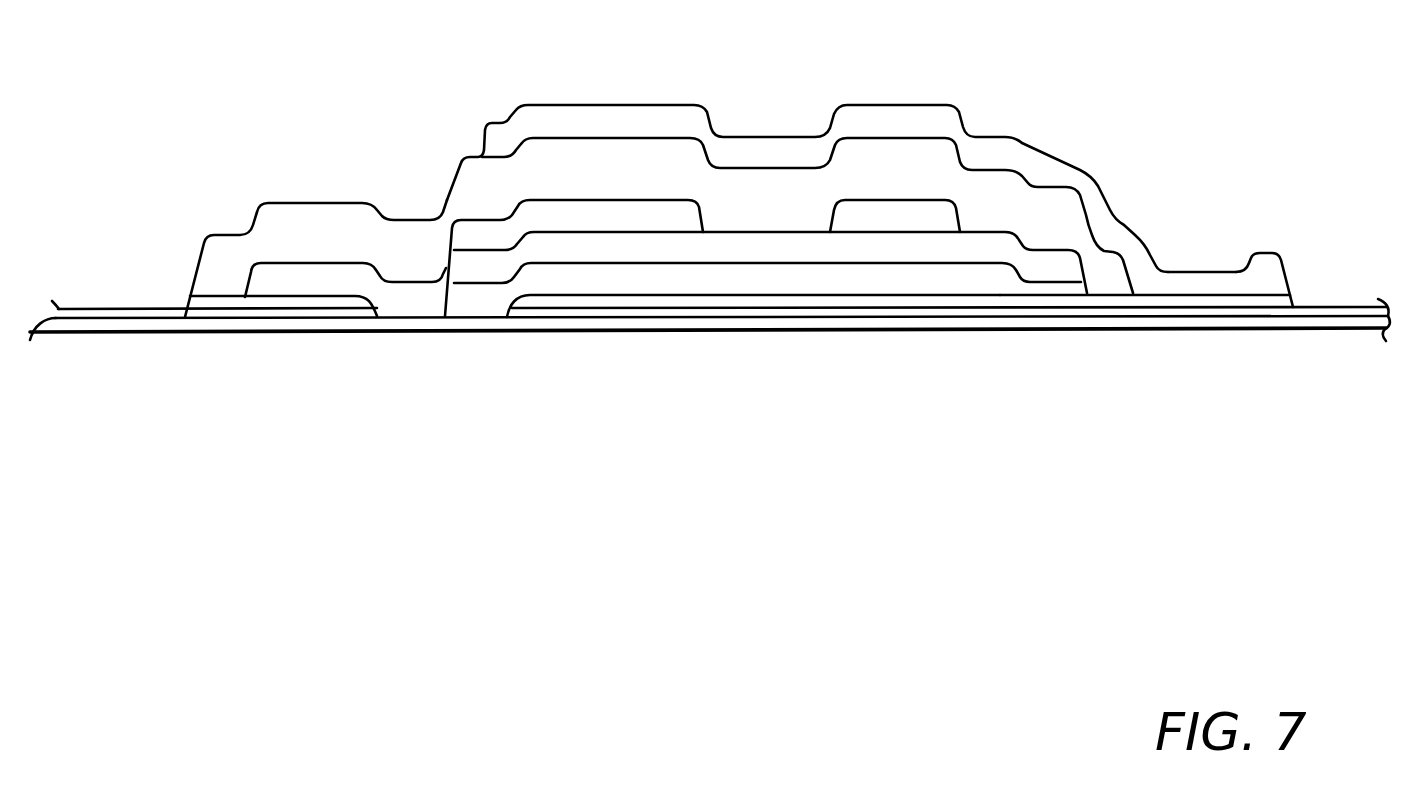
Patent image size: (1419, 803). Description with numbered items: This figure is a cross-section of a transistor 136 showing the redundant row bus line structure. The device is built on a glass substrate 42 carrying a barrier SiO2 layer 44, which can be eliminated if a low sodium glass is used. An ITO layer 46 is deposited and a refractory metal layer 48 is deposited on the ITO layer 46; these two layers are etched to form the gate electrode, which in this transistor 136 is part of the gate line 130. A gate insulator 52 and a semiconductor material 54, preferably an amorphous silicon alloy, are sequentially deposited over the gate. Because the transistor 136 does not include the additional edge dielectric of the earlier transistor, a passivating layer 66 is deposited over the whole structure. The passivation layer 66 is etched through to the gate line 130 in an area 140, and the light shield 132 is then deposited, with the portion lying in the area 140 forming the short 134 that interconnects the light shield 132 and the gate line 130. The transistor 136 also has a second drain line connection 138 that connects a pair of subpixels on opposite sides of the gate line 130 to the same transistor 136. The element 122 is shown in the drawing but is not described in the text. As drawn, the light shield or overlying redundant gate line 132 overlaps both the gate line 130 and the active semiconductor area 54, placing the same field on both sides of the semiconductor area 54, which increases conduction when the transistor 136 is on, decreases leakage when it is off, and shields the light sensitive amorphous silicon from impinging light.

The glass substrate 42 is at (582, 391).
The barrier SiO2 layer 44 is at (1007, 321).
The ITO layer 46 is at (729, 311).
The refractory metal layer 48 is at (910, 300).
The gate insulator 52 is at (923, 290).
The semiconductor material 54 is at (877, 260).
The passivating layer 66 is at (785, 229).
The raised portion 122 is at (895, 210).
The gate line 130 is at (1110, 301).
The light shield 132 is at (864, 120).
The short 134 is at (1160, 279).
The transistor 136 is at (742, 182).
The second drain line connection 138 is at (619, 217).
The area 140 is at (1197, 292).